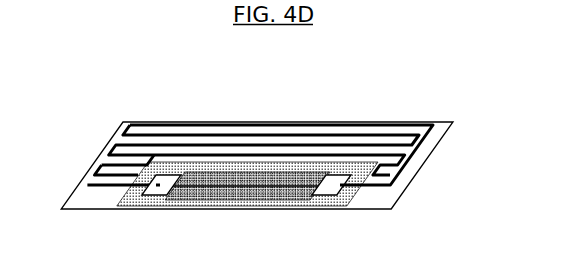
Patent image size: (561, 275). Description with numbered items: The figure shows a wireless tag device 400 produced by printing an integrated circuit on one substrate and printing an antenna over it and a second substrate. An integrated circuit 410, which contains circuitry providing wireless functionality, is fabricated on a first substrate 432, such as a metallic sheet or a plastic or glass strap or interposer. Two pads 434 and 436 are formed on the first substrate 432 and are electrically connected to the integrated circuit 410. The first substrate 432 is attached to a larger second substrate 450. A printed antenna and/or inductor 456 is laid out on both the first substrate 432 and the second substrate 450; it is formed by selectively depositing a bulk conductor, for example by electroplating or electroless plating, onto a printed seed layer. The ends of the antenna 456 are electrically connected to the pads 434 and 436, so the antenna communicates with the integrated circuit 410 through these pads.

The device 400 is at (153, 68).
The integrated circuit 410 is at (245, 207).
The first substrate 432 is at (208, 204).
The pad 434 is at (163, 207).
The pad 436 is at (327, 207).
The second substrate 450 is at (420, 170).
The printed antenna and/or inductor 456 is at (287, 123).